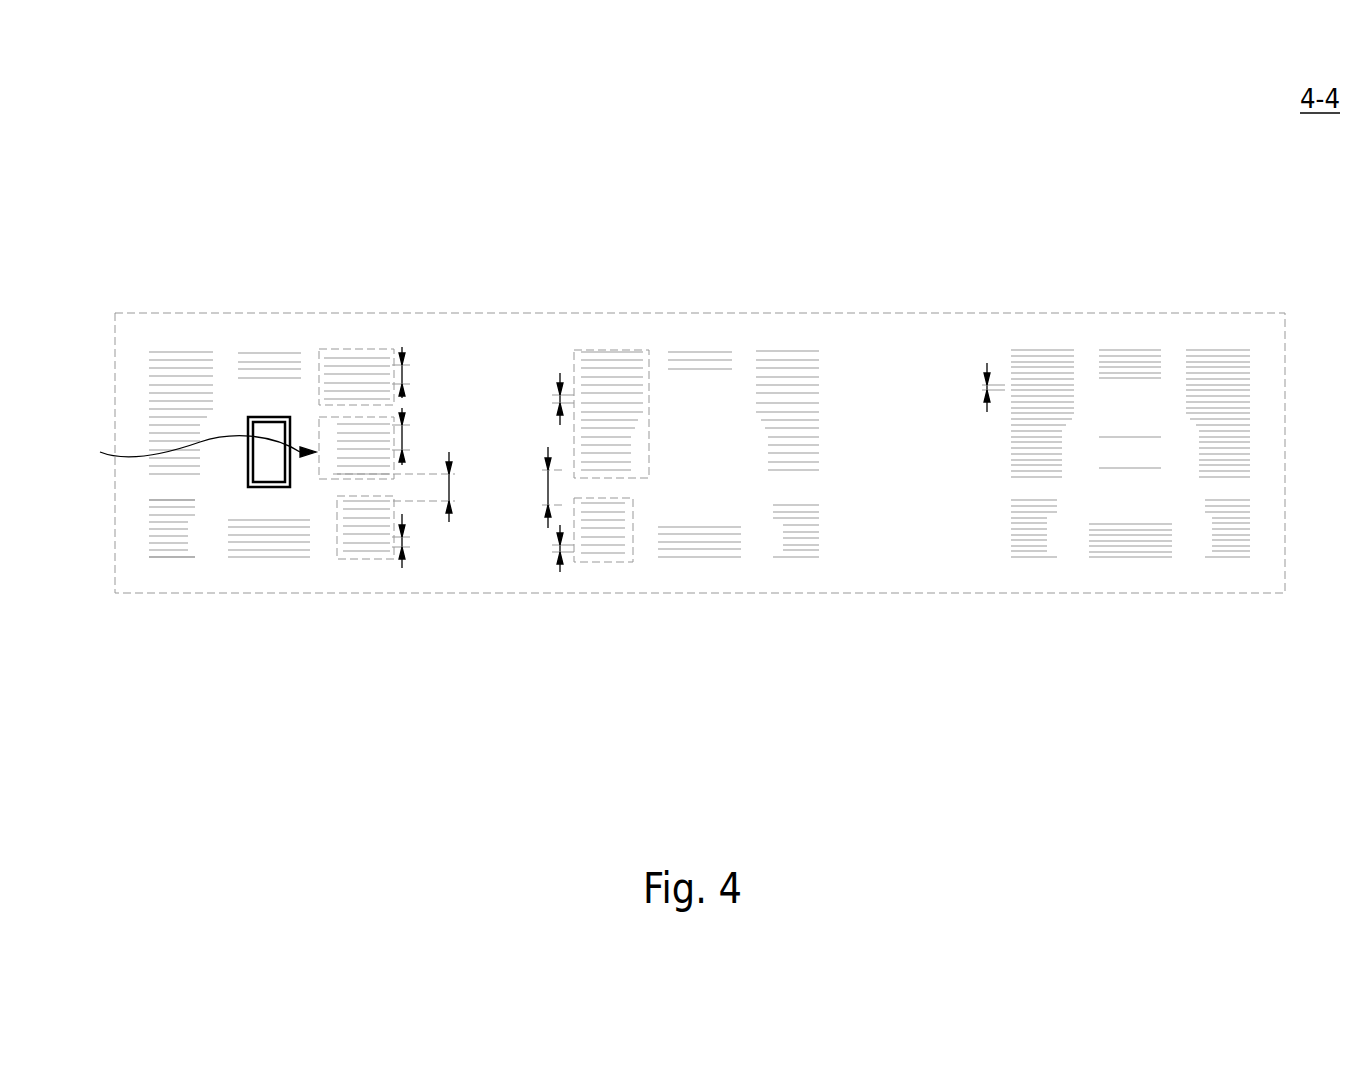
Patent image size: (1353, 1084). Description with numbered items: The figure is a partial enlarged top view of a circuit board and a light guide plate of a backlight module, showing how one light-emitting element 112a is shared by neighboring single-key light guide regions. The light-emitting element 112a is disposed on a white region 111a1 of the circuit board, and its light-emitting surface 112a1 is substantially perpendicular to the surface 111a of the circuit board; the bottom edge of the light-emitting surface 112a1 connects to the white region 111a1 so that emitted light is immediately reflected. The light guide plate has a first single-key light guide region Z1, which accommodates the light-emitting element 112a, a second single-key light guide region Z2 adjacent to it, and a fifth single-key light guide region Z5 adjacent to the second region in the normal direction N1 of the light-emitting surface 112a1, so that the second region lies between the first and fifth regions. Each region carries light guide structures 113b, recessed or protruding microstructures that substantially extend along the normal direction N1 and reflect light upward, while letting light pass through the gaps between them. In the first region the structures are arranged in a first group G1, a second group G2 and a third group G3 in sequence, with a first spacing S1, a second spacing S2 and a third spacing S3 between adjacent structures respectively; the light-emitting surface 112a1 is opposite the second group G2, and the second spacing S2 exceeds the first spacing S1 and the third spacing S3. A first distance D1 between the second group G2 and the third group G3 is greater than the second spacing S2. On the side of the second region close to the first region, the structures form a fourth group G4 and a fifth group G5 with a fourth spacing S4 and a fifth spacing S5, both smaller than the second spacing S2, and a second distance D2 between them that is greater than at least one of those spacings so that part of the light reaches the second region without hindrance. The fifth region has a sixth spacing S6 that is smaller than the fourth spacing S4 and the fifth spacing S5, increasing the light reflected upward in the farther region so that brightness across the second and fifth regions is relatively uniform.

The surface of the circuit board 111a is at (487, 327).
The white region 111a1 is at (258, 414).
The light-emitting element 112a is at (262, 478).
The light-emitting surface 112a1 is at (290, 484).
The light guide structures 113b is at (163, 558).
The normal direction N1 is at (189, 452).
The first single-key light guide region Z1 is at (171, 327).
The second single-key light guide region Z2 is at (788, 326).
The fifth single-key light guide region Z5 is at (1225, 325).
The first group G1 is at (358, 349).
The second group G2 is at (319, 421).
The third group G3 is at (372, 560).
The fourth group G4 is at (615, 350).
The fifth group G5 is at (610, 563).
The first spacing S1 is at (419, 372).
The second spacing S2 is at (419, 436).
The third spacing S3 is at (419, 541).
The fourth spacing S4 is at (546, 399).
The fifth spacing S5 is at (547, 548).
The sixth spacing S6 is at (974, 387).
The first distance D1 is at (412, 487).
The second distance D2 is at (535, 487).